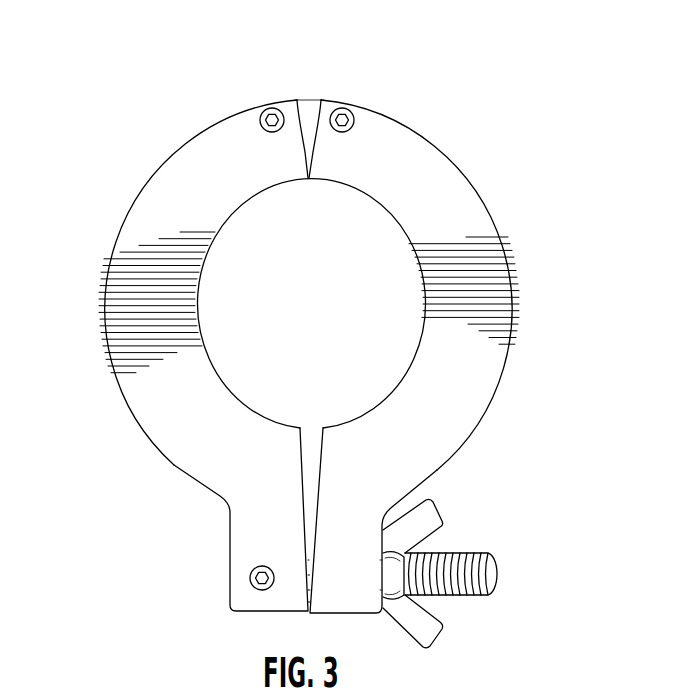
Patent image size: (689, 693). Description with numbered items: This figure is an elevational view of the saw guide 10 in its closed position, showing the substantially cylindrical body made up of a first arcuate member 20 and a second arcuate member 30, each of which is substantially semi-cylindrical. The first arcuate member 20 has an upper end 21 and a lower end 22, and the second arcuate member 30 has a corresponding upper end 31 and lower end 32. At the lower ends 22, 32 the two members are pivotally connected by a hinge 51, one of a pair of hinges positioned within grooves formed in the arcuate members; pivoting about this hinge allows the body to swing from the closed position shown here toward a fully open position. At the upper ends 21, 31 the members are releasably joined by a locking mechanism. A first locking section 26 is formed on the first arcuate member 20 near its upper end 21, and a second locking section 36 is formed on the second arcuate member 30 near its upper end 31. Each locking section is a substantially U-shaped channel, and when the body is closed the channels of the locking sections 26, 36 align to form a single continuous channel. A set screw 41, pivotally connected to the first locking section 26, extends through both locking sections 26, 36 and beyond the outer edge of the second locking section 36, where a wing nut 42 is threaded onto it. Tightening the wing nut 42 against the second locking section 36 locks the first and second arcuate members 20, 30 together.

The saw guide 10 is at (84, 129).
The first arcuate member 20 is at (165, 420).
The upper end of first arcuate member 21 is at (298, 110).
The lower end of first arcuate member 22 is at (282, 614).
The first locking section 26 is at (250, 603).
The second arcuate member 30 is at (428, 160).
The upper end of second arcuate member 31 is at (323, 105).
The lower end of second arcuate member 32 is at (323, 612).
The second locking section 36 is at (352, 594).
The set screw 41 is at (458, 557).
The wing nut 42 is at (423, 518).
The hinge 51 is at (307, 112).